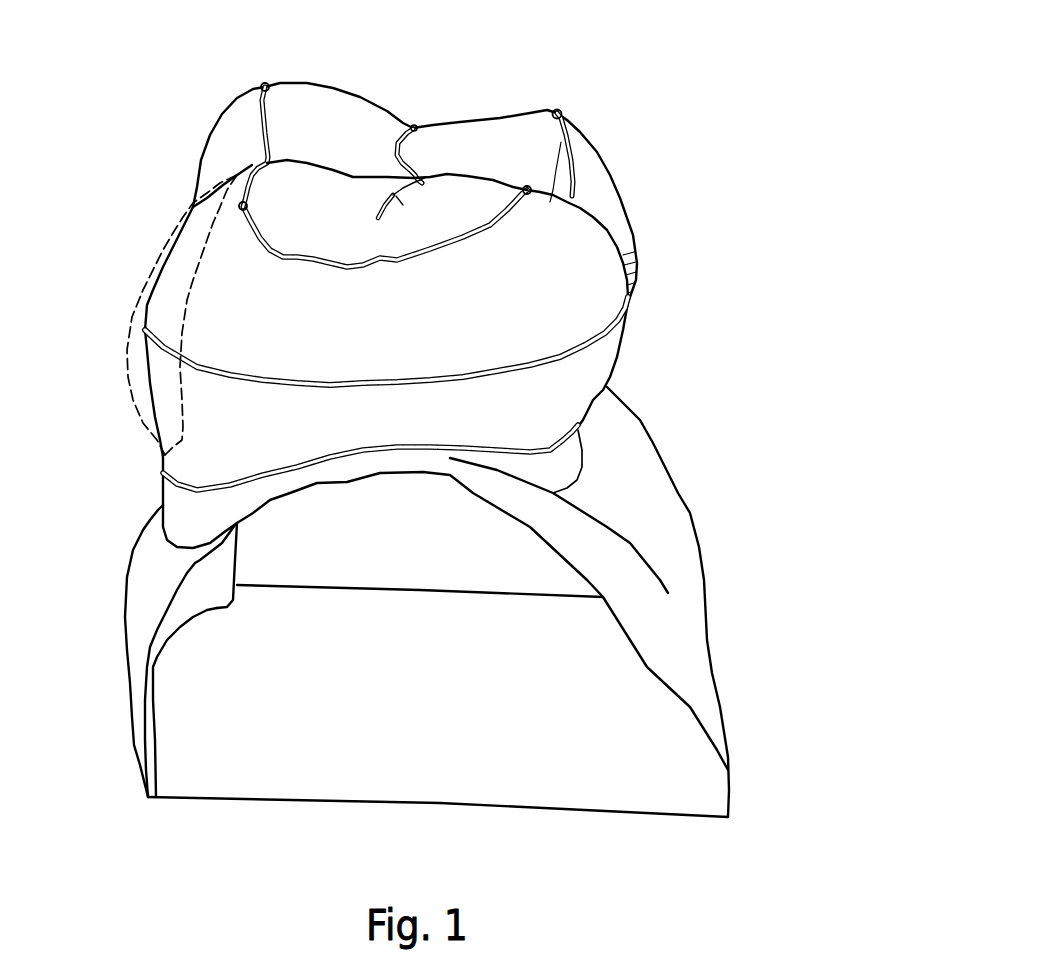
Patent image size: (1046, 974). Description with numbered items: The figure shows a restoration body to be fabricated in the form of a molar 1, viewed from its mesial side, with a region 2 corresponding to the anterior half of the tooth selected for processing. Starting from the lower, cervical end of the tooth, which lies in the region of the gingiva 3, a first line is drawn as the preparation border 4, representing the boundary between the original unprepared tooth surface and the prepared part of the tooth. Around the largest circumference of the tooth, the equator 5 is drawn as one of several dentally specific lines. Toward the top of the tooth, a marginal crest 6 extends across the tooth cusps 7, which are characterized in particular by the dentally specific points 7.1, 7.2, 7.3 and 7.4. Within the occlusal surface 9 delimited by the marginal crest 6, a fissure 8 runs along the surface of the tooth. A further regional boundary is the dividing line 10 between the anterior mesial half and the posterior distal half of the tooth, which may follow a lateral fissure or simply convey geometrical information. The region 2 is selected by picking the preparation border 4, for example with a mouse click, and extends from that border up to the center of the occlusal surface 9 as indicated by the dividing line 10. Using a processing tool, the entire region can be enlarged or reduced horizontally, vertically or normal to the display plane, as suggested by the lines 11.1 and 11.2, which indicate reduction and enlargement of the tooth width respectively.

The molar 1 is at (434, 278).
The region 2 is at (626, 227).
The gingiva 3 is at (427, 602).
The preparation border 4 is at (503, 440).
The equator 5 is at (553, 379).
The marginal crest 6 is at (286, 239).
The tooth cusps 7 is at (272, 249).
The dentally specific point 7.1 is at (145, 184).
The dentally specific point 7.2 is at (283, 55).
The dentally specific point 7.3 is at (637, 90).
The dentally specific point 7.4 is at (625, 215).
The fissure 8 is at (433, 97).
The occlusal surface 9 is at (361, 206).
The dividing line 10 is at (378, 117).
The line indicating reduction 11.1 is at (145, 316).
The line indicating enlargement 11.2 is at (143, 315).